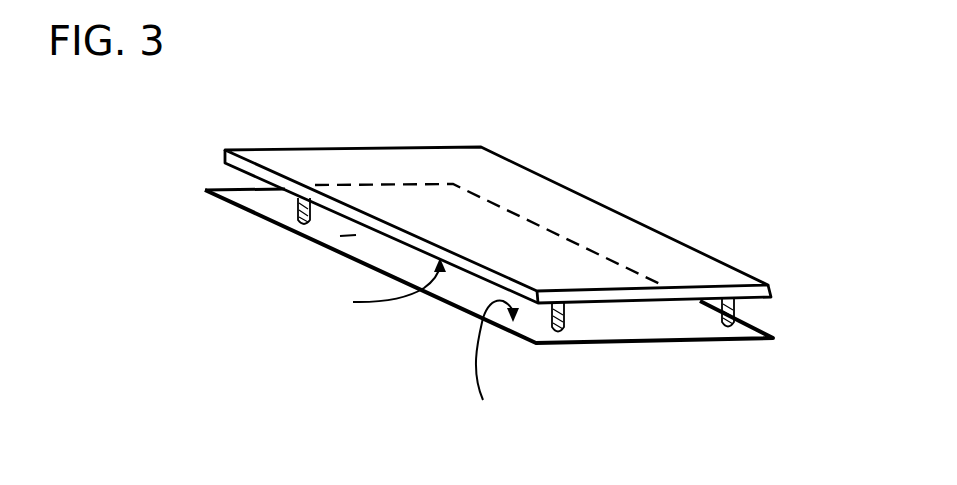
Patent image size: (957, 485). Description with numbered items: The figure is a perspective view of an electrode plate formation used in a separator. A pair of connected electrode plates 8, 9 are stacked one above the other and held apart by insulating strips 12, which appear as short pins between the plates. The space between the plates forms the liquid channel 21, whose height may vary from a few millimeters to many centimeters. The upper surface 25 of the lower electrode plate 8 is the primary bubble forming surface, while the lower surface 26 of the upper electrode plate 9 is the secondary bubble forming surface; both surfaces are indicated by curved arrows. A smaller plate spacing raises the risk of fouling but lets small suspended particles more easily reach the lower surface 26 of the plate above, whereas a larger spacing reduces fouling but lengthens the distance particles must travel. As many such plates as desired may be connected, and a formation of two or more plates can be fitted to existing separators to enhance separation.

The electrode plate 8 is at (773, 337).
The electrode plate 9 is at (775, 292).
The insulating strips 12 is at (735, 313).
The liquid channel 21 is at (353, 235).
The upper surface 25 is at (492, 368).
The lower surface 26 is at (377, 291).